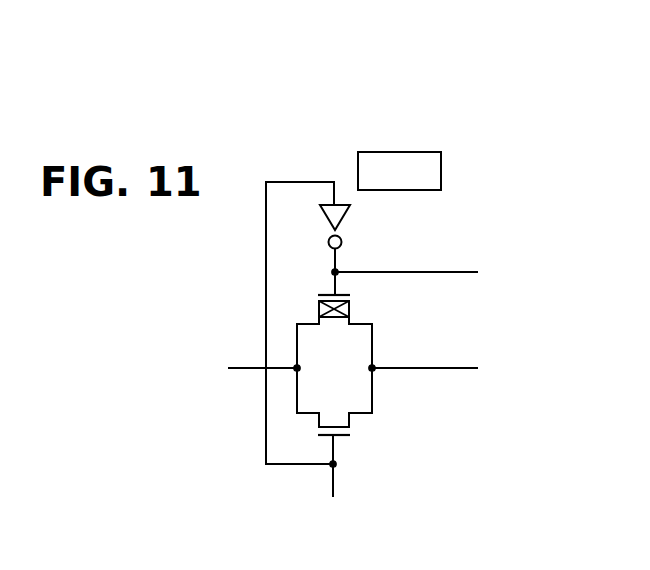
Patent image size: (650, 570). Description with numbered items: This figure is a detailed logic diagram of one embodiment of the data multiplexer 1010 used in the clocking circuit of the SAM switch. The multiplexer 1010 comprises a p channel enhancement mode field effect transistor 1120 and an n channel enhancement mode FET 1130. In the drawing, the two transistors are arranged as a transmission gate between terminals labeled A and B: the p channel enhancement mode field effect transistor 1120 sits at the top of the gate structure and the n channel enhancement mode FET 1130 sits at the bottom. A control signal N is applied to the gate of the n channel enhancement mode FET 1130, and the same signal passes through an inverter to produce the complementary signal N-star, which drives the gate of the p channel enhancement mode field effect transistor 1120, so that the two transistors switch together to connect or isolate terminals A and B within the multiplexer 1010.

The multiplexer 1010 is at (327, 125).
The p channel enhancement mode field effect transistor 1120 is at (353, 311).
The n channel enhancement mode FET 1130 is at (353, 427).